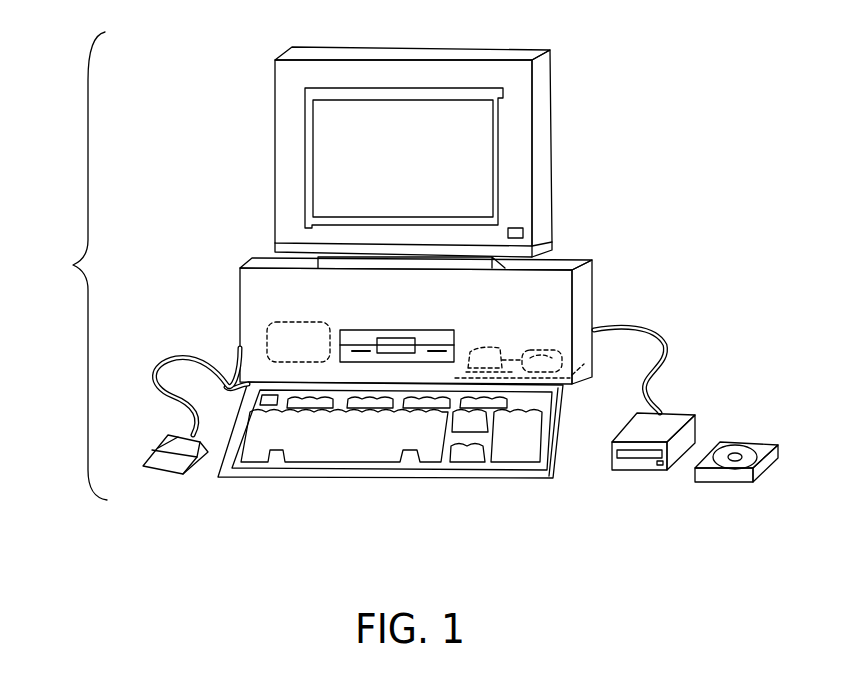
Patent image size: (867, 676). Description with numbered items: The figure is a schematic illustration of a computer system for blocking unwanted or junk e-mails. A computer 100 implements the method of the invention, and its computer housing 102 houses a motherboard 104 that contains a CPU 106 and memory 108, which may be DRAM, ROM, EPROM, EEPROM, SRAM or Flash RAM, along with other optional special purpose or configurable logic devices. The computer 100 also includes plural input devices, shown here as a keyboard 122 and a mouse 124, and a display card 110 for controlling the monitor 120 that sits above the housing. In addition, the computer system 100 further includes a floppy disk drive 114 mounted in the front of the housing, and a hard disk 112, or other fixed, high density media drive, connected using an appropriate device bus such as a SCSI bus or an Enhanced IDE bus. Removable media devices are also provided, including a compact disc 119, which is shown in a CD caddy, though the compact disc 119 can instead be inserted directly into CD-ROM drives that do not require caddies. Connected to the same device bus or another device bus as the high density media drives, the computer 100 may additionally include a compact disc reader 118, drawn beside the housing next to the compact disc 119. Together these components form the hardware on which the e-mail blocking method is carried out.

The computer 100 is at (69, 266).
The computer housing 102 is at (461, 360).
The motherboard 104 is at (505, 360).
The CPU 106 is at (592, 395).
The memory 108 is at (538, 350).
The display card 110 is at (490, 348).
The hard disk 112 is at (267, 334).
The floppy disk drive 114 is at (365, 336).
The compact disc reader 118 is at (685, 412).
The compact disc 119 is at (768, 440).
The monitor 120 is at (553, 72).
The keyboard 122 is at (310, 480).
The mouse 124 is at (153, 450).